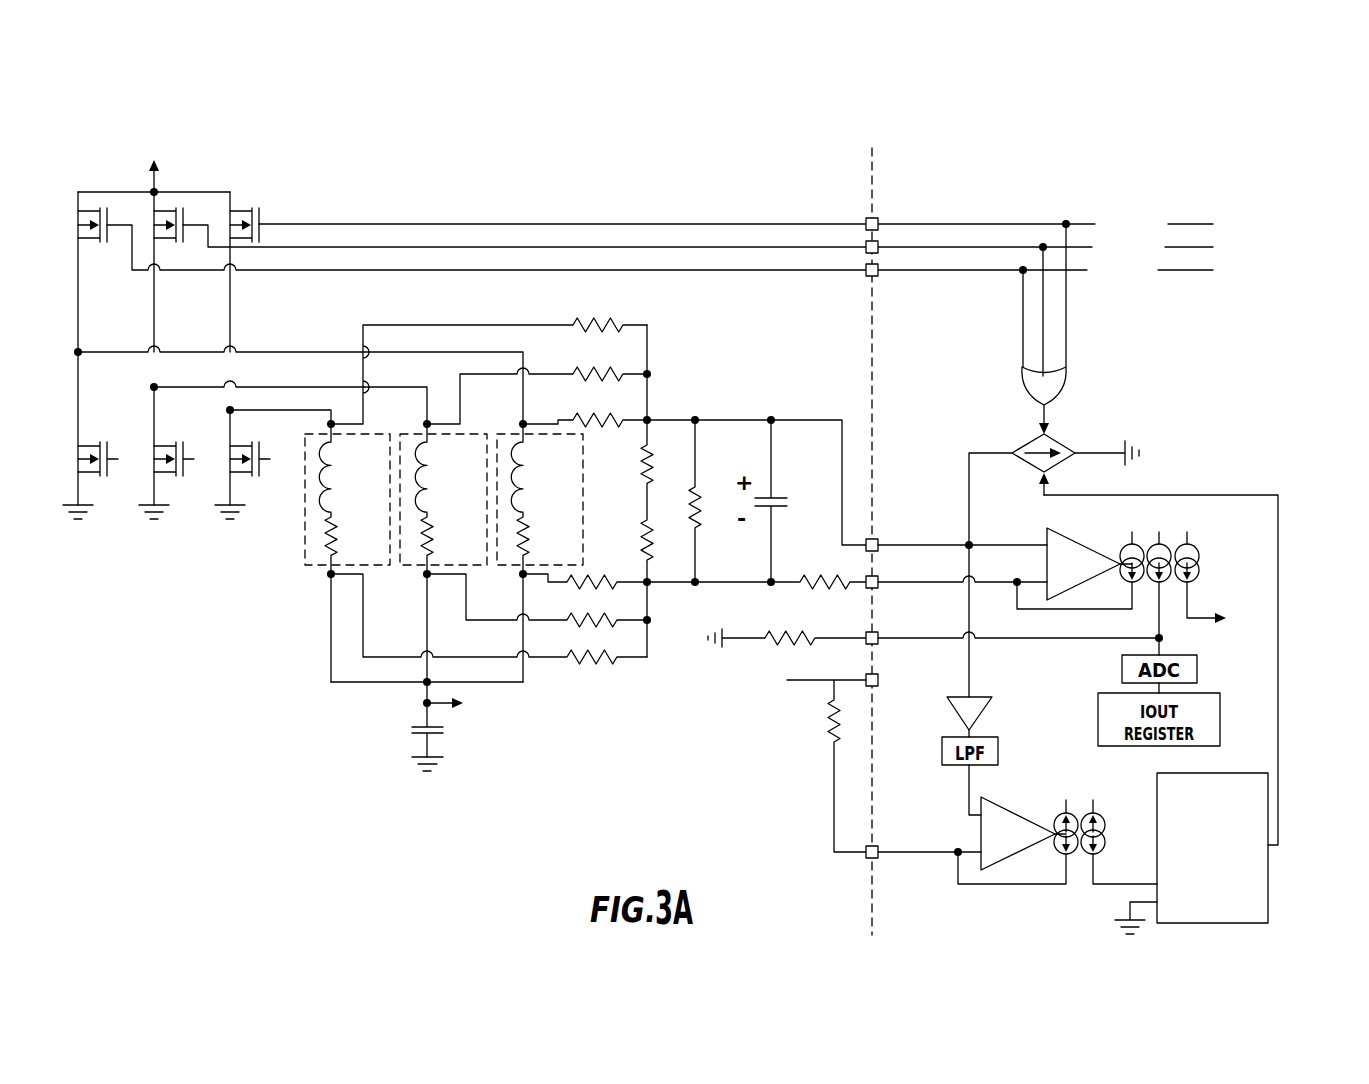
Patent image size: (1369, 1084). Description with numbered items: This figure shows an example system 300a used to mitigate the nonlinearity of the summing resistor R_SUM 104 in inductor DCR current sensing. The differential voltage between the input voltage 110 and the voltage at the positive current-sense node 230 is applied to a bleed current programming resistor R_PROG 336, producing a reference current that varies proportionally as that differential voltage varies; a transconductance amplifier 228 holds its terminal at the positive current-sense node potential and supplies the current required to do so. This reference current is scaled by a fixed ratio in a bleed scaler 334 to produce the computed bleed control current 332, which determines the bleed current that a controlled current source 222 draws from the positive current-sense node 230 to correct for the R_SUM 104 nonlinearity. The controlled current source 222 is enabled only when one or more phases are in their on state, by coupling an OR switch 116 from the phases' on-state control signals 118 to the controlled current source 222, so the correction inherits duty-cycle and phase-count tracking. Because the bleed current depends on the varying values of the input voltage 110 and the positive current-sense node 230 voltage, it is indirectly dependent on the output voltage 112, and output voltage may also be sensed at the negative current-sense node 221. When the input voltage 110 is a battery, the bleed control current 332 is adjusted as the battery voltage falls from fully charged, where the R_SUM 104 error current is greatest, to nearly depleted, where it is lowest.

The system 300a is at (144, 103).
The R_SUM 104 is at (570, 394).
The on-state control signal 118 is at (1203, 224).
The V_OUT 112 is at (490, 727).
The ISUMN node 221 is at (858, 580).
The R_PROG 336 is at (799, 764).
The V_VIN 110 is at (934, 729).
The OR switch 116 is at (1024, 387).
The controlled current source 222 is at (1062, 441).
The ISUMP node 230 is at (980, 545).
The I_BLEEDCONTROL 332 is at (1316, 558).
The transconductance amplifier 228 is at (1026, 851).
The I_BLEED Scaler 334 is at (1231, 894).